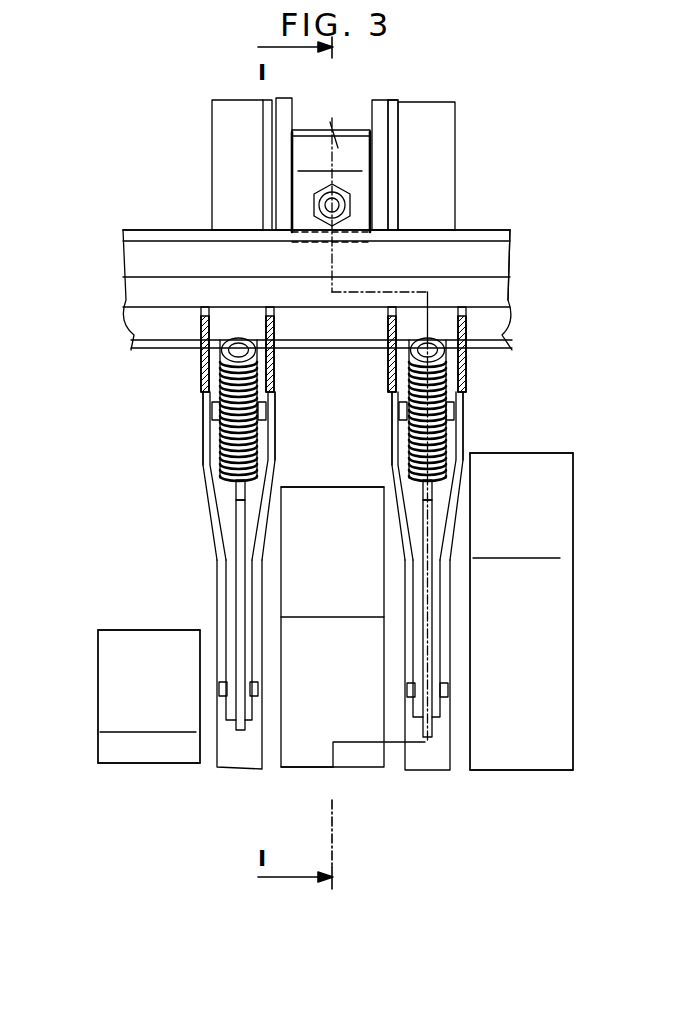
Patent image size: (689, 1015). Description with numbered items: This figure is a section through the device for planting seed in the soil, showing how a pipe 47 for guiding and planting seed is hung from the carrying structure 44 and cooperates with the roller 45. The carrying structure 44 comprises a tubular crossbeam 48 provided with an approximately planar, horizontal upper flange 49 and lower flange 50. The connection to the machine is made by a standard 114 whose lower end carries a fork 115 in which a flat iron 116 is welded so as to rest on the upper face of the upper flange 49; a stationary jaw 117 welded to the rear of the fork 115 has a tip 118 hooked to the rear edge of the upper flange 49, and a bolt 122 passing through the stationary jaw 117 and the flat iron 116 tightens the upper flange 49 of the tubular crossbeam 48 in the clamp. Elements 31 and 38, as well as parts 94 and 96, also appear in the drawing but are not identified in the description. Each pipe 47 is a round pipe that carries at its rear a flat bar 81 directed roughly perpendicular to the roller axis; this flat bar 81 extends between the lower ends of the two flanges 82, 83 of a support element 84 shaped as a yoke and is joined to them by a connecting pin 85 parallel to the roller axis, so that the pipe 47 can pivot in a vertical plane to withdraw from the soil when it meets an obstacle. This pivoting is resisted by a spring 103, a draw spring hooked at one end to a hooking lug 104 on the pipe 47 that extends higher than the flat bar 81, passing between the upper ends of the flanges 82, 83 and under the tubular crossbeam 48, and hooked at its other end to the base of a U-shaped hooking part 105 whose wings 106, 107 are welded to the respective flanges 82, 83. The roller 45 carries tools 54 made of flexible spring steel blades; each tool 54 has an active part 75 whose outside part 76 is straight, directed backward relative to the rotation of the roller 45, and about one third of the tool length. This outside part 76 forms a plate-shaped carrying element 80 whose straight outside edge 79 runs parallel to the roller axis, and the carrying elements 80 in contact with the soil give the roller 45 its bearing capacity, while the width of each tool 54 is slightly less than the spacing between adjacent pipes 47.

The side guide plate 31 is at (218, 142).
The plate 38 is at (390, 98).
The carrying structure 44 is at (168, 230).
The roller 45 is at (90, 701).
The pipe for guiding and planting seed in the soil 47 is at (232, 768).
The tubular crossbeam 48 is at (135, 257).
The upper flange 49 is at (481, 231).
The lower flange 50 is at (358, 344).
The tool 54 is at (110, 763).
The active part 75 is at (152, 763).
The outside part 76 is at (108, 656).
The outside edge 79 is at (150, 628).
The carrying element 80 is at (335, 611).
The flat bar 81 is at (237, 641).
The flange 82 is at (207, 499).
The flange 83 is at (271, 500).
The support element 84 is at (278, 457).
The connecting pin 85 is at (219, 690).
The guide rod 94 is at (202, 355).
The stop block 96 is at (266, 410).
The spring 103 is at (219, 431).
The hooking lug 104 is at (237, 487).
The hooking part 105 is at (202, 363).
The wing 106 is at (202, 380).
The wing 107 is at (277, 372).
The standard 114 is at (270, 112).
The fork 115 is at (290, 98).
The flat iron 116 is at (373, 197).
The stationary jaw 117 is at (332, 119).
The tip 118 is at (362, 246).
The bolt 122 is at (318, 205).